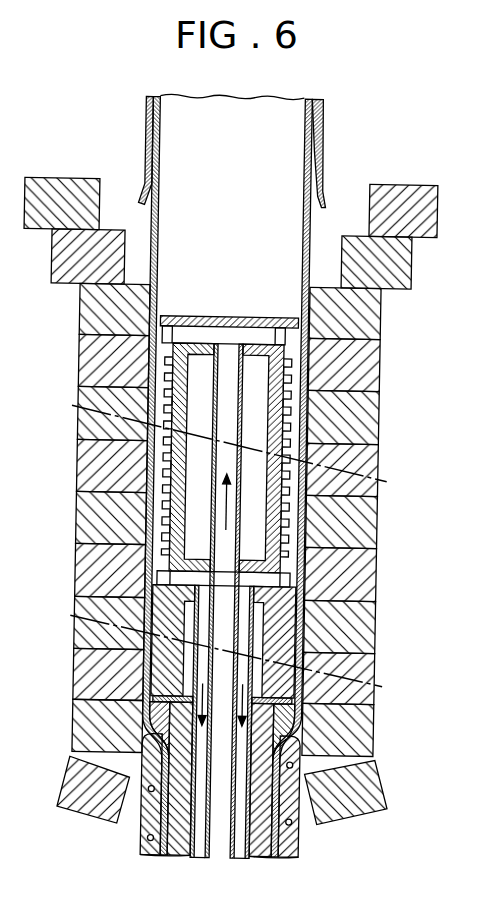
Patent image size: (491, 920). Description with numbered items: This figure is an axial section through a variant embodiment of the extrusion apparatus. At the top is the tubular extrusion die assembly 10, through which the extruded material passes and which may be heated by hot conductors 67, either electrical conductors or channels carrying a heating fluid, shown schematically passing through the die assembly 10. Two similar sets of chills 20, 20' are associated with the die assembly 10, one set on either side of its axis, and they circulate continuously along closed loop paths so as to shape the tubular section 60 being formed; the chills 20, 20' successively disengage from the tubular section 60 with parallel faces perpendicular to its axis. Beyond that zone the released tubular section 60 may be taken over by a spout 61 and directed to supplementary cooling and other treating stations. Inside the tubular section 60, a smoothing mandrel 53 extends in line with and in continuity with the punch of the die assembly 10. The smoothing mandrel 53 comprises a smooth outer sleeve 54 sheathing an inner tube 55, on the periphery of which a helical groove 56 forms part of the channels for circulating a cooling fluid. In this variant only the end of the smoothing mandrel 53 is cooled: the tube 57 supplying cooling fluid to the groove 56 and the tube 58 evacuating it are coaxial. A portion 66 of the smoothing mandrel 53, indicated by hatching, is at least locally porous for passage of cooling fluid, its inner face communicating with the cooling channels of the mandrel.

The tubular extrusion die assembly 10 is at (150, 864).
The chills 20 is at (71, 244).
The chills 20' is at (399, 247).
The smoothing mandrel 53 is at (211, 311).
The smooth outer sleeve 54 is at (308, 374).
The inner tube 55 is at (308, 418).
The helical groove 56 is at (310, 446).
The tube for supplying cooling fluid 57 is at (245, 852).
The tube for evacuating cooling fluid 58 is at (198, 852).
The tubular section 60 is at (310, 214).
The spout 61 is at (318, 127).
The porous portion of the smoothing mandrel 66 is at (291, 585).
The hot conductors 67 is at (152, 794).